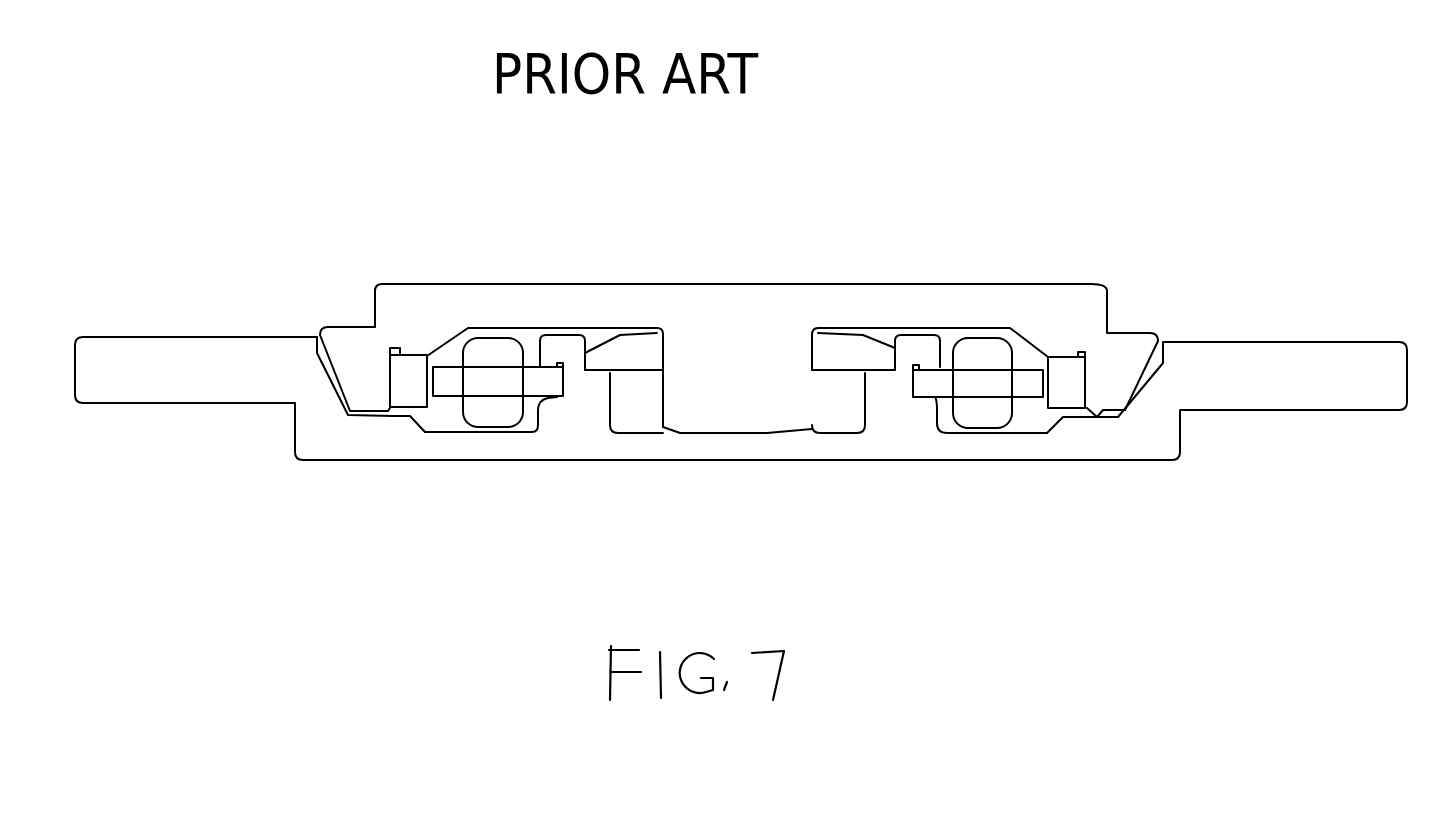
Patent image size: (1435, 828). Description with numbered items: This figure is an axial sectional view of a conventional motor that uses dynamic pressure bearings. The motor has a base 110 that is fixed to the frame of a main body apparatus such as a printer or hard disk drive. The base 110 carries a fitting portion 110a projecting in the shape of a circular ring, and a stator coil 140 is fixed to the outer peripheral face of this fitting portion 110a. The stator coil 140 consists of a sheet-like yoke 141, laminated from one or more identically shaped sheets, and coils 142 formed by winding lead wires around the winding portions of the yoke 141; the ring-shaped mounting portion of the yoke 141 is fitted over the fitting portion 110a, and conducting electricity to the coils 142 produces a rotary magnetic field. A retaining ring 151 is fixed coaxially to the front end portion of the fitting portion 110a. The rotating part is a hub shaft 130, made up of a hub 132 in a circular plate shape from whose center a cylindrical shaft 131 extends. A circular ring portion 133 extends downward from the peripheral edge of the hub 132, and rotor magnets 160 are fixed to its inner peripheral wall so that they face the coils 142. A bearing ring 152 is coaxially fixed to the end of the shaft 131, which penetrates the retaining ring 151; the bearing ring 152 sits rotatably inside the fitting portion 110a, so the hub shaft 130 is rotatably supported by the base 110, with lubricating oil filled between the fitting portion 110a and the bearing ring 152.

The base 110 is at (1283, 342).
The fitting portion 110a is at (888, 410).
The hub shaft 130 is at (883, 297).
The shaft 131 is at (753, 420).
The hub 132 is at (1138, 340).
The circular ring portion 133 is at (1113, 392).
The stator coil 140 is at (458, 407).
The yoke 141 is at (545, 380).
The coils 142 is at (493, 357).
The retaining ring 151 is at (632, 352).
The bearing ring 152 is at (832, 422).
The rotor magnets 160 is at (407, 393).